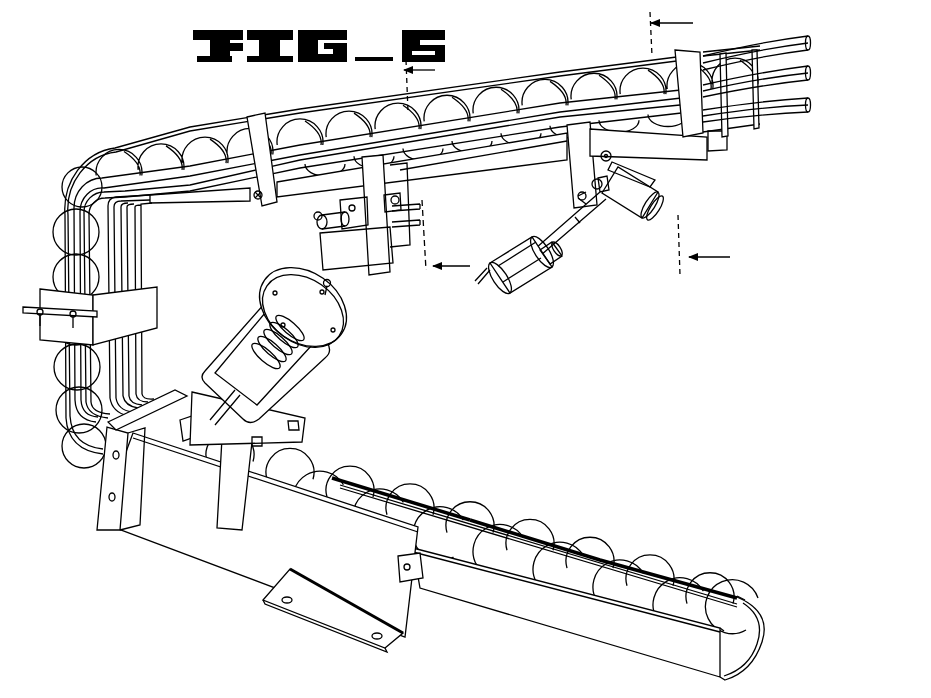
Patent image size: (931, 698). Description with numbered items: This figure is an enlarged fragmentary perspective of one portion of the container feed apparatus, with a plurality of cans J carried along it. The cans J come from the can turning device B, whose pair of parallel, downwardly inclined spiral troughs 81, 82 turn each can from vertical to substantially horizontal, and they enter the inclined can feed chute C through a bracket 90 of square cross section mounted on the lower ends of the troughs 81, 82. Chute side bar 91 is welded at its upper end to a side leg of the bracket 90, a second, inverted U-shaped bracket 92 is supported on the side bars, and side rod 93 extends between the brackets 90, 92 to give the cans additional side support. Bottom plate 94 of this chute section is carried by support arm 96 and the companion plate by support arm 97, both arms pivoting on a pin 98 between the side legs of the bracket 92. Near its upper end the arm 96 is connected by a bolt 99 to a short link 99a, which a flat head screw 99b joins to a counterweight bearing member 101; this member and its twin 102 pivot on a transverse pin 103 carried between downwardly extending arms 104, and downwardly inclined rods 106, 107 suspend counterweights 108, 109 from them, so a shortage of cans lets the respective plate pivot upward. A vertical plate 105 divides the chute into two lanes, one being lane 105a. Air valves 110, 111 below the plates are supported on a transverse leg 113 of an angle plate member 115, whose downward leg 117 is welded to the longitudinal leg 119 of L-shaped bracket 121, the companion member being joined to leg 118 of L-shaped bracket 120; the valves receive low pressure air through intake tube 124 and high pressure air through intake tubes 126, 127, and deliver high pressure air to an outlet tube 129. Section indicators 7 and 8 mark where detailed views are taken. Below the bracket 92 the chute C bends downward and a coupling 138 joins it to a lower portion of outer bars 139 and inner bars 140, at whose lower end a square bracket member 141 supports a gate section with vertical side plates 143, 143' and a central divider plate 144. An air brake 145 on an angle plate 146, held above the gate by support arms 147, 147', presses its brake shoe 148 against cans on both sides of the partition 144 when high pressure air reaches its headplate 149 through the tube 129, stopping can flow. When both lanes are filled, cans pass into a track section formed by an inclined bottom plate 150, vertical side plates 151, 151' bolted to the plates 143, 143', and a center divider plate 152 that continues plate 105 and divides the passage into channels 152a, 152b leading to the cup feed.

The can feed chute C is at (160, 123).
The cans J is at (62, 277).
The can turning device B is at (790, 127).
The section line 7- 7 is at (690, 143).
The section line 8- 8 is at (437, 163).
The spiral trough 81 is at (776, 130).
The spiral trough 82 is at (791, 38).
The bracket 90 is at (688, 55).
The chute side bar 91 is at (212, 172).
The second bracket 92 is at (256, 118).
The side rod 93 is at (140, 170).
The bottom plate 94 is at (507, 150).
The support arm 96 is at (682, 158).
The support arm 97 is at (718, 152).
The pin 98 is at (254, 197).
The bolt 99 is at (612, 156).
The short link 99a is at (632, 206).
The flat head screw 99b is at (652, 183).
The counterweight bearing member 101 is at (630, 212).
The counterweight bearing member 102 is at (660, 192).
The transverse pin 103 is at (576, 198).
The downwardly extending arm 104 is at (578, 178).
The vertical plate 105 is at (600, 70).
The lane 105a is at (465, 92).
The downwardly inclined rod 106 is at (566, 228).
The downwardly inclined rod 107 is at (578, 228).
The counterweight 108 is at (500, 268).
The counterweight 109 is at (550, 264).
The air valve 110 is at (315, 215).
The air valve 111 is at (393, 200).
The transverse leg 113 is at (422, 208).
The angle plate member 115 is at (396, 240).
The downwardly extending leg 117 is at (422, 224).
The longitudinally extending leg 118 is at (372, 188).
The longitudinally extending leg 119 is at (430, 186).
The L-shaped bracket 120 is at (366, 258).
The L-shaped bracket 121 is at (416, 252).
The intake tube 124 is at (318, 227).
The high pressure intake tube 126 is at (356, 228).
The high pressure intake tube 127 is at (395, 196).
The high pressure air outlet tube 129 is at (331, 285).
The coupling 138 is at (152, 303).
The outer bars 139 is at (63, 428).
The inner bars 140 is at (128, 356).
The square bracket member 141 is at (100, 508).
The vertical side plate 143 is at (261, 542).
The vertical side plate 143' is at (410, 476).
The central divider plate 144 is at (405, 508).
The air brake 145 is at (354, 340).
The angle plate 146 is at (285, 418).
The support arm 147 is at (202, 484).
The support arm 147' is at (315, 426).
The brake shoe 148 is at (188, 430).
The headplate 149 is at (322, 313).
The inclined bottom plate 150 is at (737, 660).
The vertical side plate 151 is at (566, 612).
The vertical side plate 151' is at (603, 559).
The center divider plate 152 is at (463, 528).
The channel 152a is at (722, 626).
The channel 152b is at (740, 589).